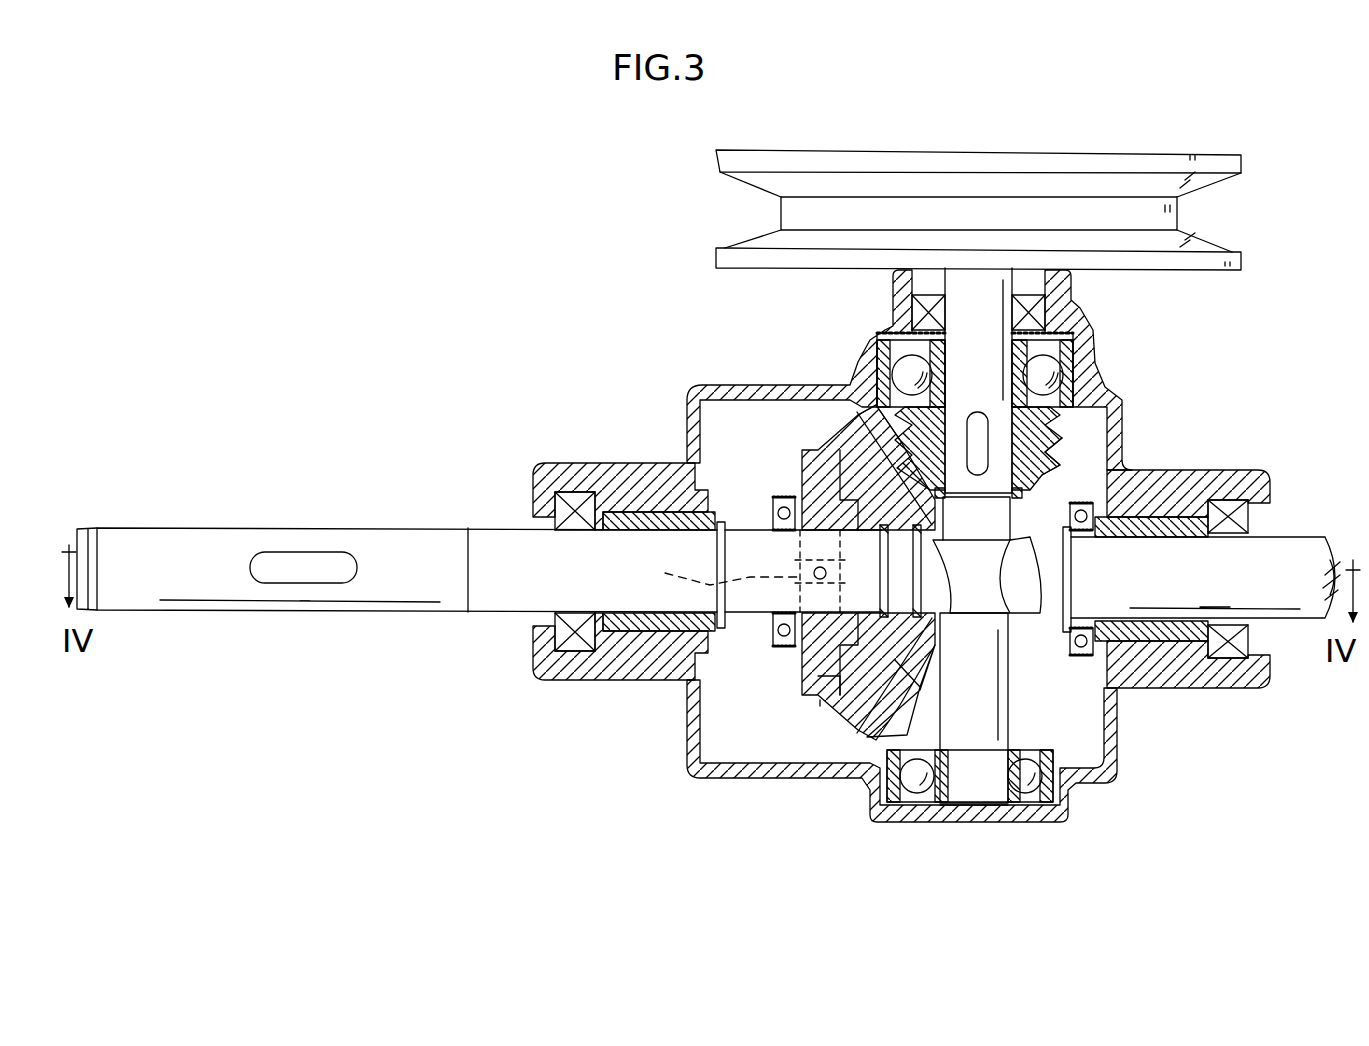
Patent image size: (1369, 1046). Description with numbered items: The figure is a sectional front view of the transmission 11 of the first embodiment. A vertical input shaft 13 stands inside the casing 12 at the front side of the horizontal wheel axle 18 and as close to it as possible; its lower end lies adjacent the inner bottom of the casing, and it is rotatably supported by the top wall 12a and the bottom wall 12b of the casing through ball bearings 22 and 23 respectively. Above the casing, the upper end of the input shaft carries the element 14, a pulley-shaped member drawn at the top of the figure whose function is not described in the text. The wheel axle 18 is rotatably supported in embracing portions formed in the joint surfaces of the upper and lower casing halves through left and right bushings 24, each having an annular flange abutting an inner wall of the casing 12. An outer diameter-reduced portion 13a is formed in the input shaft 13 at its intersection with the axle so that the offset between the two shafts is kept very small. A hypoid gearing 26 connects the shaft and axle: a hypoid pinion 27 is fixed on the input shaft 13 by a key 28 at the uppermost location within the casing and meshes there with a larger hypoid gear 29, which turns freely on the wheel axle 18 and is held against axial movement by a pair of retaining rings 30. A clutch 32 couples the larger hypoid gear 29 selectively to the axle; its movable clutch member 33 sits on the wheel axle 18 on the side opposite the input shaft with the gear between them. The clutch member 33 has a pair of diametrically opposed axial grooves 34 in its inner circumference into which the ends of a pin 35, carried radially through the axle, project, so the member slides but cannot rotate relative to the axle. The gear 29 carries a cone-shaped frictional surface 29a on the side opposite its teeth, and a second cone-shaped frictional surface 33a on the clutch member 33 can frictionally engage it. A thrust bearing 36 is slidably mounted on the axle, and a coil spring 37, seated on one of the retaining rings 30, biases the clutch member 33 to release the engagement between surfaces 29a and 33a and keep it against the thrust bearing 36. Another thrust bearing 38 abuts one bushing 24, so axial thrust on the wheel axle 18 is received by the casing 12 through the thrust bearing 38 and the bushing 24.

The transmission 11 is at (745, 797).
The casing 12 is at (852, 765).
The top wall 12a is at (850, 383).
The bottom wall 12b is at (870, 798).
The input shaft 13 is at (1019, 535).
The outer diameter-reduced portion 13a is at (1040, 568).
The pulley 14 is at (722, 165).
The wheel axle 18 is at (499, 527).
The ball bearing 22 is at (1050, 366).
The ball bearing 23 is at (1022, 803).
The bushings 24 is at (645, 462).
The hypoid gearing 26 is at (1068, 423).
The hypoid pinion 27 is at (1053, 448).
The key 28 is at (983, 445).
The larger hypoid gear 29 is at (915, 697).
The cone-shaped frictional surface 29a is at (818, 676).
The retaining rings 30 is at (905, 527).
The clutch 32 is at (806, 716).
The movable clutch member 33 is at (827, 538).
The second cone-shaped frictional surface 33a is at (903, 450).
The axial grooves 34 is at (709, 565).
The pin 35 is at (893, 560).
The thrust bearing 36 is at (775, 513).
The coil spring 37 is at (830, 597).
The thrust bearing 38 is at (1190, 579).